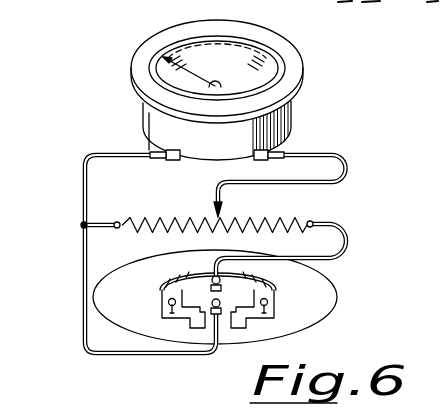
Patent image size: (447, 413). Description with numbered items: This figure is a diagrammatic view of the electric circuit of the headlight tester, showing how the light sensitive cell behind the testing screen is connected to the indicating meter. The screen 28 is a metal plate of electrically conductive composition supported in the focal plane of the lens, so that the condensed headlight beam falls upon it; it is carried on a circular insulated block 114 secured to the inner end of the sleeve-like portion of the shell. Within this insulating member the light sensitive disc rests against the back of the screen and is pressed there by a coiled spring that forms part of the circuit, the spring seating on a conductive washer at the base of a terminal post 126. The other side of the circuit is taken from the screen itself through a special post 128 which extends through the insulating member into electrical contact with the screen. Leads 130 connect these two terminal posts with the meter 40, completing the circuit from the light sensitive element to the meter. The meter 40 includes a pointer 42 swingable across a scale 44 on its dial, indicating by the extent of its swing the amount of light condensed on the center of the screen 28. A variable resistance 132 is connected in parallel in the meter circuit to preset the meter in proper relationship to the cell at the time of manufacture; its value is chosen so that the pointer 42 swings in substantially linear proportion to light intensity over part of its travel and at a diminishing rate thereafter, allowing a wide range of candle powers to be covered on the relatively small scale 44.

The screen 28 is at (310, 318).
The meter 40 is at (184, 80).
The pointer 42 is at (193, 70).
The scale 44 is at (213, 43).
The circular insulated block 114 is at (333, 275).
The terminal post 126 is at (223, 313).
The special post 128 is at (207, 286).
The leads 130 is at (83, 250).
The variable resistance 132 is at (161, 216).